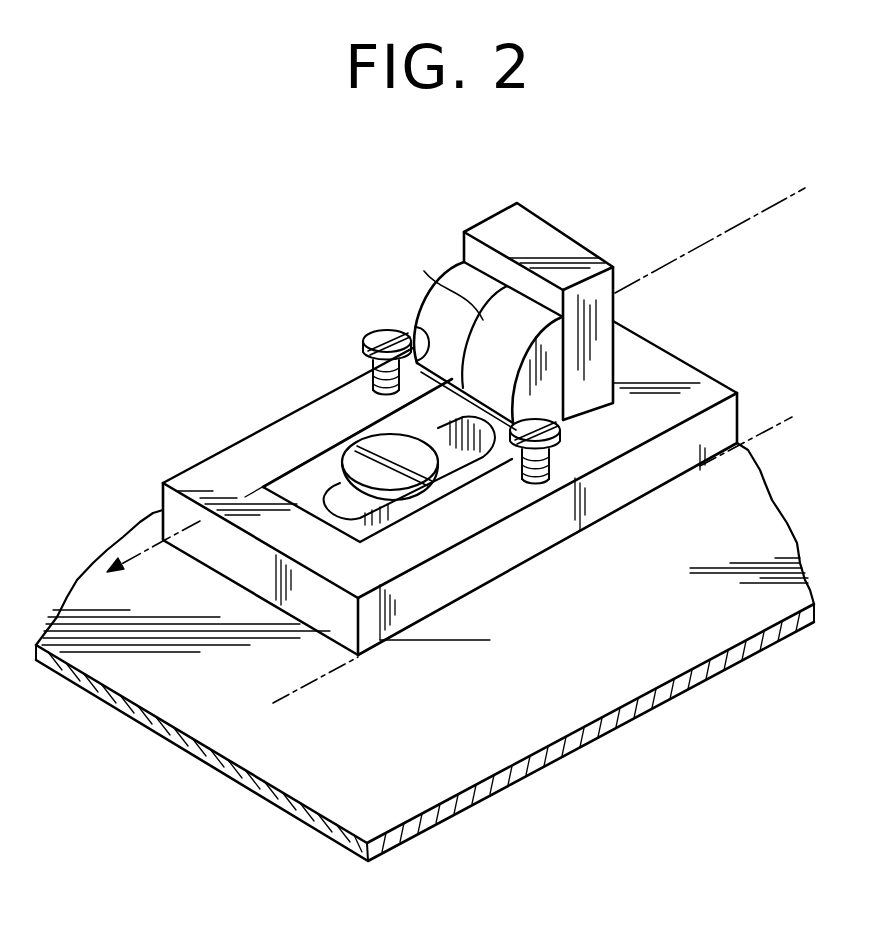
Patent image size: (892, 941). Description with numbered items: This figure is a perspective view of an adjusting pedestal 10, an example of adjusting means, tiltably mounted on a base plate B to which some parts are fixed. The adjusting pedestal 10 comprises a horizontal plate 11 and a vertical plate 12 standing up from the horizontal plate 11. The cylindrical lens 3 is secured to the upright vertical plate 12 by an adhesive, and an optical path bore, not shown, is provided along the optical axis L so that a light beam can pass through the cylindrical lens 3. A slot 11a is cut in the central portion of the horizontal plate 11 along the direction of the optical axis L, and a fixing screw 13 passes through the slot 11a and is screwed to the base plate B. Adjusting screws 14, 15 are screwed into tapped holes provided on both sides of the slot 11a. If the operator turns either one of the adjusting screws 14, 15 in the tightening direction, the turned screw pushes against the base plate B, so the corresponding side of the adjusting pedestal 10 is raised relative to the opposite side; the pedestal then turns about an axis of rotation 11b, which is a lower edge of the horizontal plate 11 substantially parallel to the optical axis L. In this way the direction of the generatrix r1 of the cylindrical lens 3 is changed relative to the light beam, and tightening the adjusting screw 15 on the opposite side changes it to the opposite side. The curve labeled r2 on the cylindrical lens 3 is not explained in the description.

The cylindrical lens 3 is at (473, 302).
The adjusting pedestal 10 is at (418, 593).
The horizontal plate 11 is at (697, 387).
The slot 11a is at (477, 447).
The axis of rotation 11b is at (332, 673).
The vertical plate 12 is at (568, 249).
The fixing screw 13 is at (350, 458).
The adjusting screw 14 is at (364, 340).
The adjusting screw 15 is at (552, 437).
The generatrix r1 is at (415, 331).
The second radius of curvature r2 is at (445, 280).
The optical axis L is at (692, 258).
The base plate B is at (542, 712).